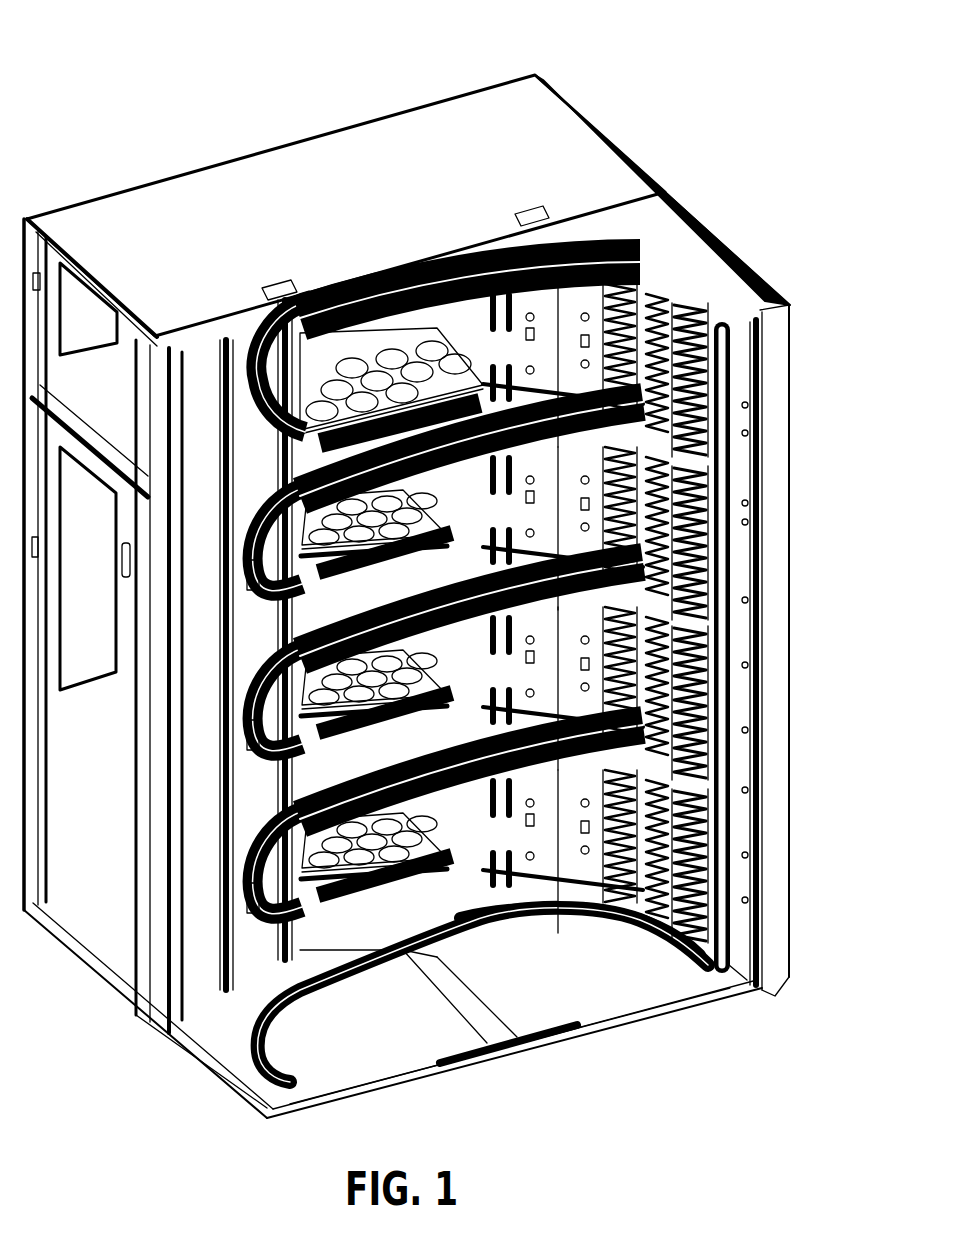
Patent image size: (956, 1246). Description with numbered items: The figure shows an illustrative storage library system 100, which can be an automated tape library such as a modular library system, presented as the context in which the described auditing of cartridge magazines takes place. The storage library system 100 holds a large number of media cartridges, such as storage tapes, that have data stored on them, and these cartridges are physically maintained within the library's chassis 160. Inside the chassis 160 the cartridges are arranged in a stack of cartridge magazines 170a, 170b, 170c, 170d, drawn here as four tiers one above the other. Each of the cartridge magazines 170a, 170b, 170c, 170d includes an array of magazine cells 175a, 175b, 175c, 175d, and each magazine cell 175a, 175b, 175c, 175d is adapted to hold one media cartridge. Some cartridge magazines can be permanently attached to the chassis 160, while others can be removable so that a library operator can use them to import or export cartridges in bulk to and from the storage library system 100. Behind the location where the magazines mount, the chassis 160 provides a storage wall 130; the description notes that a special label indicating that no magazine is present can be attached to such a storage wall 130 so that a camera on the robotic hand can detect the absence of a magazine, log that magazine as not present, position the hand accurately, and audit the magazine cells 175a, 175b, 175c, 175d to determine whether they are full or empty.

The storage library system 100 is at (112, 66).
The storage wall 130 is at (740, 953).
The chassis 160 is at (347, 203).
The cartridge magazine 170a is at (675, 302).
The cartridge magazine 170b is at (677, 463).
The cartridge magazine 170c is at (677, 625).
The cartridge magazine 170d is at (675, 785).
The magazine cell 175a is at (608, 343).
The magazine cell 175b is at (607, 497).
The magazine cell 175c is at (607, 659).
The magazine cell 175d is at (610, 823).